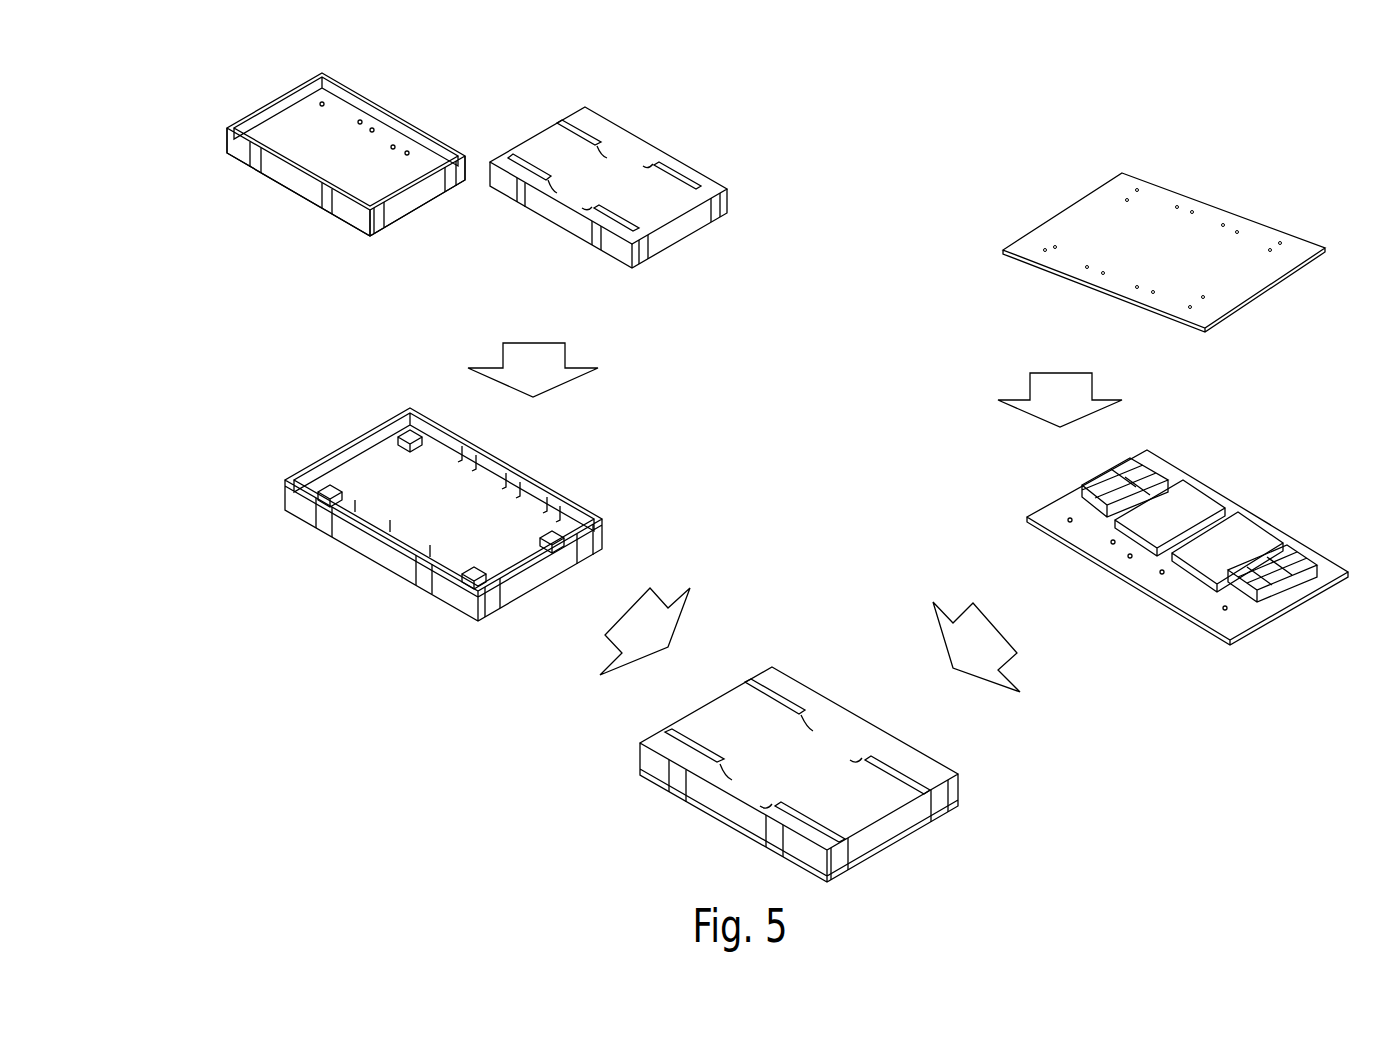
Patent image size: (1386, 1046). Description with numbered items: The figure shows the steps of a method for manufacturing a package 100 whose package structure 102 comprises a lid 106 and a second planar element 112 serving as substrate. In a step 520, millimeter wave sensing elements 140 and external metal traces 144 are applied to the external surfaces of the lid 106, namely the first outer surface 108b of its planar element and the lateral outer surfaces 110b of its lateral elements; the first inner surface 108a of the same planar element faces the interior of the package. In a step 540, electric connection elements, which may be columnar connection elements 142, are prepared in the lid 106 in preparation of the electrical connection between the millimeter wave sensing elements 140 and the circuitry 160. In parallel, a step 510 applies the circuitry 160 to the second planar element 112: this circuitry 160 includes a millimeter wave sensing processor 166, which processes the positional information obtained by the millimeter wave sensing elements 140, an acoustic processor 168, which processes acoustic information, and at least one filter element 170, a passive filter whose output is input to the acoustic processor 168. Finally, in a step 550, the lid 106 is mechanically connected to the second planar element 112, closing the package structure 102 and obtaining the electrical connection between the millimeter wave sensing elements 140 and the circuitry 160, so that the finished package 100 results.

The package 100 is at (829, 780).
The package structure 102 is at (870, 720).
The lid 106 is at (298, 188).
The first inner surface 108a is at (311, 163).
The first outer surface 108b is at (596, 143).
The lateral outer surface 110b is at (362, 232).
The second planar element 112 is at (1250, 285).
The millimeter wave sensing element 140 is at (256, 170).
The columnar connection element 142 is at (470, 455).
The external metal trace 144 is at (520, 152).
The circuitry 160 is at (1190, 528).
The millimeter wave sensing processor 166 is at (1190, 492).
The acoustic processor 168 is at (1250, 536).
The filter element 170 is at (1130, 470).
The step of applying circuitry 510 is at (1100, 383).
The step of applying millimeter wave radar elements and external metal traces 520 is at (445, 189).
The step of preparing electric connection elements 540 is at (560, 380).
The step of mechanically connecting the lid to the substrate 550 is at (662, 620).